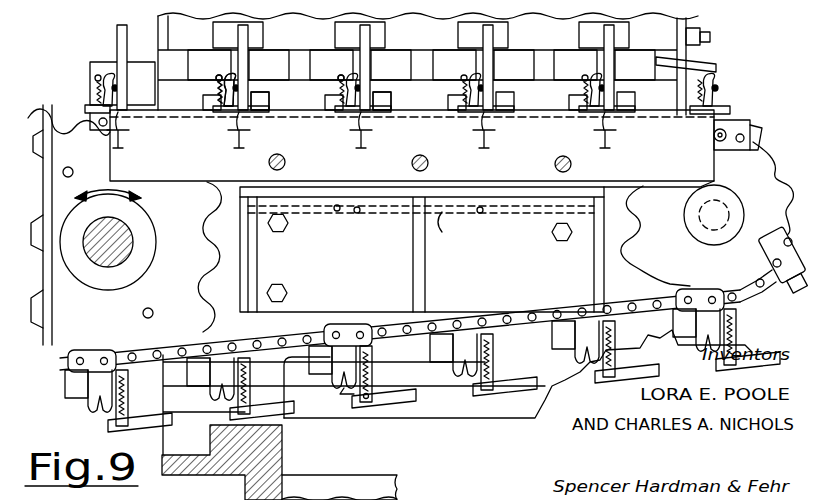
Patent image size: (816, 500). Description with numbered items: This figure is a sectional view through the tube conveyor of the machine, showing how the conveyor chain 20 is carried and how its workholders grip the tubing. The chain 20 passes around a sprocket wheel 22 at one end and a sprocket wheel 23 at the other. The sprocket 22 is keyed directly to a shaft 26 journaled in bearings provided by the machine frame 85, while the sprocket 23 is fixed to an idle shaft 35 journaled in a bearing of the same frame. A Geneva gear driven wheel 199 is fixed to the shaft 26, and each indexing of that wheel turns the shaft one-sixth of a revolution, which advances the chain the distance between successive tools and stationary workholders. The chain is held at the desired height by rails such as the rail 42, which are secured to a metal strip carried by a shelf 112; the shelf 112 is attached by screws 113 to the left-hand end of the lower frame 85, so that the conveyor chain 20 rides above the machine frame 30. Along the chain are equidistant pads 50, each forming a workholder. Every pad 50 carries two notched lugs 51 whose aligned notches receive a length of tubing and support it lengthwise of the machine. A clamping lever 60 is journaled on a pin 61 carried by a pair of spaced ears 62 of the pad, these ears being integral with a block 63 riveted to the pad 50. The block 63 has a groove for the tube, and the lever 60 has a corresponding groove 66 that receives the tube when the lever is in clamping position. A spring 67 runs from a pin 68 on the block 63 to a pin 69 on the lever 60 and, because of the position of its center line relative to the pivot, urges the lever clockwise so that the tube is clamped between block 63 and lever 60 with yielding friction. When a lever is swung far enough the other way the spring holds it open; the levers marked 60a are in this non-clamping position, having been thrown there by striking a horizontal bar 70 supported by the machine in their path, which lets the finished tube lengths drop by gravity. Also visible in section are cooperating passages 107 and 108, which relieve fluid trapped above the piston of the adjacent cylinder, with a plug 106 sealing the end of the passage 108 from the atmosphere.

The Geneva gear driven wheel 199 is at (34, 164).
The rail 42 is at (127, 145).
The shaft 26 is at (128, 232).
The passage 107 is at (240, 230).
The sprocket wheel 22 is at (240, 258).
The plug 106 is at (337, 211).
The passage 108 is at (443, 214).
The screws 113 is at (287, 294).
The shelf 112 is at (295, 312).
The conveyor chain 20 is at (544, 302).
The idle shaft 35 is at (725, 215).
The sprocket wheel 23 is at (769, 162).
The horizontal bar 70 is at (690, 36).
The clamping lever in non-clamping position 60a is at (705, 66).
The clamping lever 60 is at (248, 36).
The machine frame 85 is at (555, 24).
The pin 61 is at (221, 77).
The lugs 51 is at (239, 82).
The spring 67 is at (215, 88).
The pad 50 is at (273, 108).
The spaced ears 62 is at (340, 78).
The block 63 is at (376, 88).
The pin 68 is at (374, 358).
The pin 69 is at (380, 390).
The groove 66 is at (370, 402).
The machine frame 30 is at (366, 475).